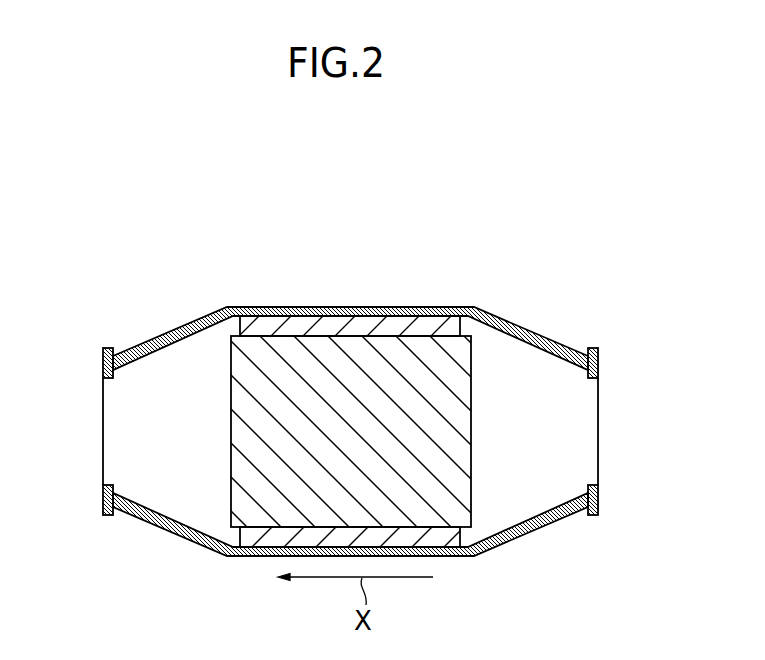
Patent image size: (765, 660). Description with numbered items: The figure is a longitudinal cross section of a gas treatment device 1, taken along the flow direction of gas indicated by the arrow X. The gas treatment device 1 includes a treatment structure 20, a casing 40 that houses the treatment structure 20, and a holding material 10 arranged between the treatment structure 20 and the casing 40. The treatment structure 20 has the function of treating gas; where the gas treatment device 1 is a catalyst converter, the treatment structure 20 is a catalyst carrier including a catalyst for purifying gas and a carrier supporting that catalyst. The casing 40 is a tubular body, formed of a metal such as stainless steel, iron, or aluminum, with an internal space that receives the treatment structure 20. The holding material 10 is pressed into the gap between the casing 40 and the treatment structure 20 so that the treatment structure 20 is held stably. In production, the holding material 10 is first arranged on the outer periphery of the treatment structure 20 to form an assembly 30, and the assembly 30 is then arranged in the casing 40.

The gas treatment device 1 is at (388, 205).
The holding material 10 is at (253, 322).
The treatment structure 20 is at (238, 361).
The assembly 30 is at (188, 242).
The casing 40 is at (434, 307).